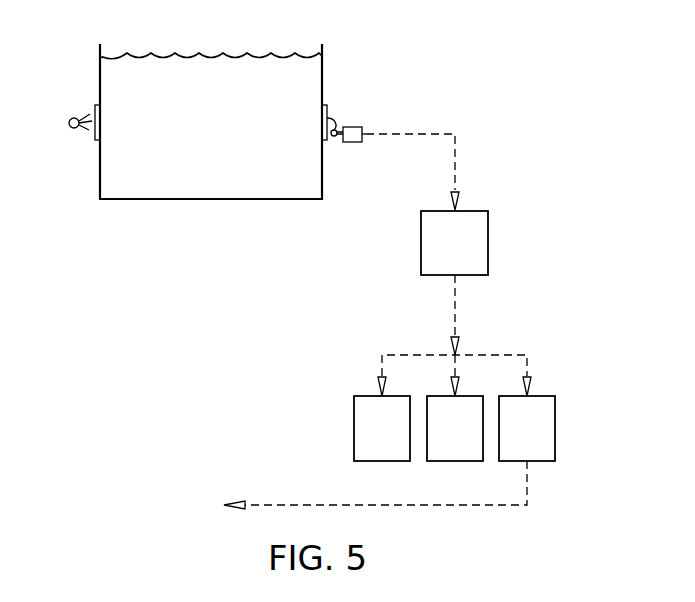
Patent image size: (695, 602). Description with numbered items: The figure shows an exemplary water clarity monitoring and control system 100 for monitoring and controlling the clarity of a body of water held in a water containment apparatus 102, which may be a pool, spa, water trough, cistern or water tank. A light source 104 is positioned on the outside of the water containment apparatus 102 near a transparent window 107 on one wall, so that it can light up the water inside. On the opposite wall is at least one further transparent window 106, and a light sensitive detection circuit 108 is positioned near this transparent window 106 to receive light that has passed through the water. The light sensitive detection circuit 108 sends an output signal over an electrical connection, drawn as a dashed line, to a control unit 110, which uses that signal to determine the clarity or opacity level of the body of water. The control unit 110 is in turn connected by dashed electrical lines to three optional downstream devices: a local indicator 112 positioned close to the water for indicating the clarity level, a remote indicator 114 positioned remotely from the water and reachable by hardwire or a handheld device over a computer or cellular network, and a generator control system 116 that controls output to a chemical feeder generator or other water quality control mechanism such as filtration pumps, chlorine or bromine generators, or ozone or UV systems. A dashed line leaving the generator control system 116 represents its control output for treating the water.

The water clarity monitoring and control system 100 is at (484, 68).
The water containment apparatus 102 is at (217, 170).
The light source 104 is at (72, 128).
The transparent window 106 is at (327, 105).
The transparent window 107 is at (95, 105).
The light sensitive detection circuit 108 is at (354, 142).
The control unit 110 is at (468, 243).
The local indicator 112 is at (370, 419).
The remote indicator 114 is at (458, 427).
The generator control system 116 is at (540, 426).